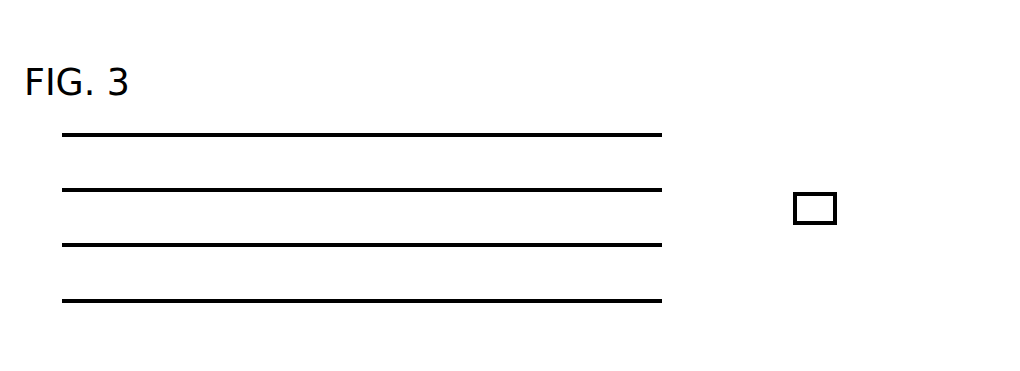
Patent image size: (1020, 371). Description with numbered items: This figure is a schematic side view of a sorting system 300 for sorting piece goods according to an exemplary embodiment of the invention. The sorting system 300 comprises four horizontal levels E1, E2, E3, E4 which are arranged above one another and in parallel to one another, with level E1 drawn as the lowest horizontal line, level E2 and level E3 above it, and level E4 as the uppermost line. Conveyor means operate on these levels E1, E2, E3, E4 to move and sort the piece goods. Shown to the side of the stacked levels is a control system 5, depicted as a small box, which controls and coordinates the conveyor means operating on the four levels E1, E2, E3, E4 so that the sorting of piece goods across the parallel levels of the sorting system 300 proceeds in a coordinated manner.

The horizontal level E4 is at (397, 104).
The horizontal level E3 is at (397, 159).
The horizontal level E2 is at (397, 215).
The horizontal level E1 is at (397, 270).
The sorting system 300 is at (856, 57).
The control system 5 is at (815, 170).